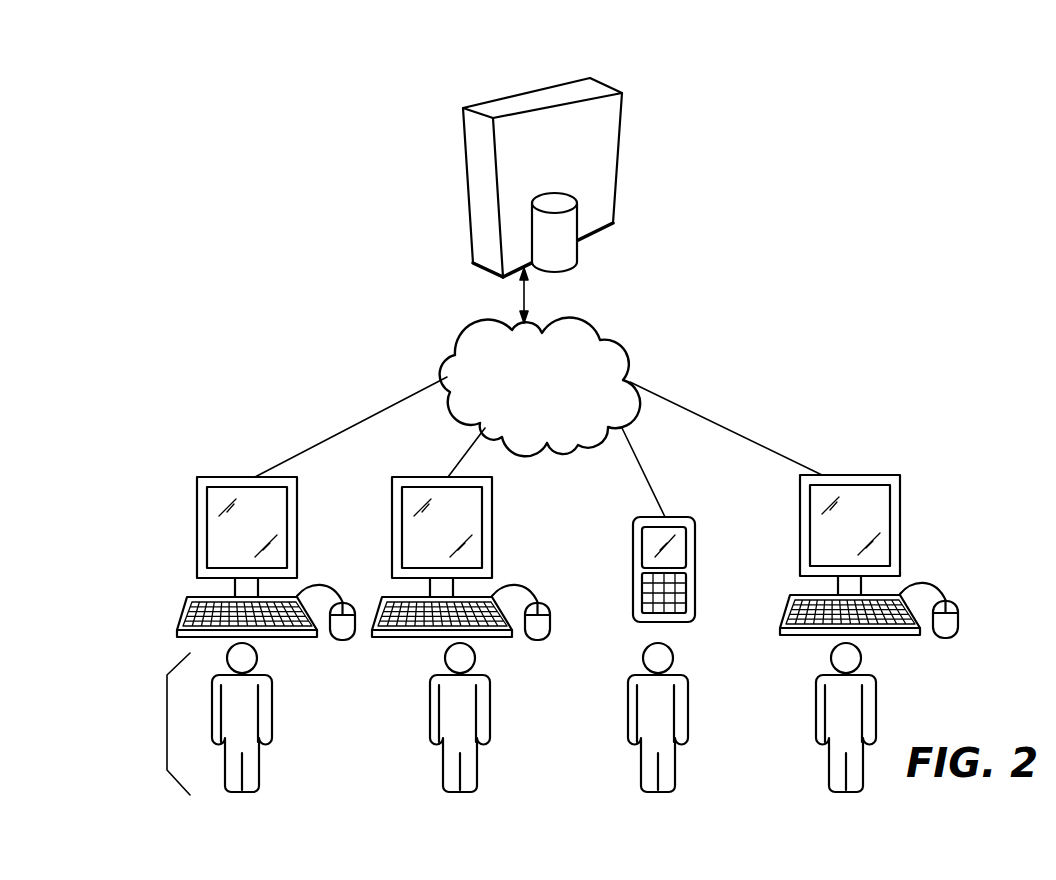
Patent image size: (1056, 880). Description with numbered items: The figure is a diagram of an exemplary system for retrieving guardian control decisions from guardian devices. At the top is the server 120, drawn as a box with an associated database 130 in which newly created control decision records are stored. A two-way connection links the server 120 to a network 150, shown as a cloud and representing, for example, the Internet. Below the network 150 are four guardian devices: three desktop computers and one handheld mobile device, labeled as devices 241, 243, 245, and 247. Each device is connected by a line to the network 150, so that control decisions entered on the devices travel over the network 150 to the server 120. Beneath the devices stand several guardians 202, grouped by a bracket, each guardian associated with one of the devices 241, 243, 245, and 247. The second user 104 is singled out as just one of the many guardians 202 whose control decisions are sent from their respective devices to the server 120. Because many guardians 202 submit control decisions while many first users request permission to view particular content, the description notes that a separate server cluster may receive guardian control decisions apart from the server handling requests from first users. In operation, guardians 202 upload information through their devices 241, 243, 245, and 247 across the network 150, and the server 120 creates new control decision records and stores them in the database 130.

The server 120 is at (493, 98).
The database 130 is at (568, 257).
The network 150 is at (628, 349).
The device 241 is at (197, 500).
The device 243 is at (392, 500).
The device 245 is at (635, 520).
The device 247 is at (800, 505).
The guardians 202 is at (513, 719).
The second user 104 is at (877, 680).